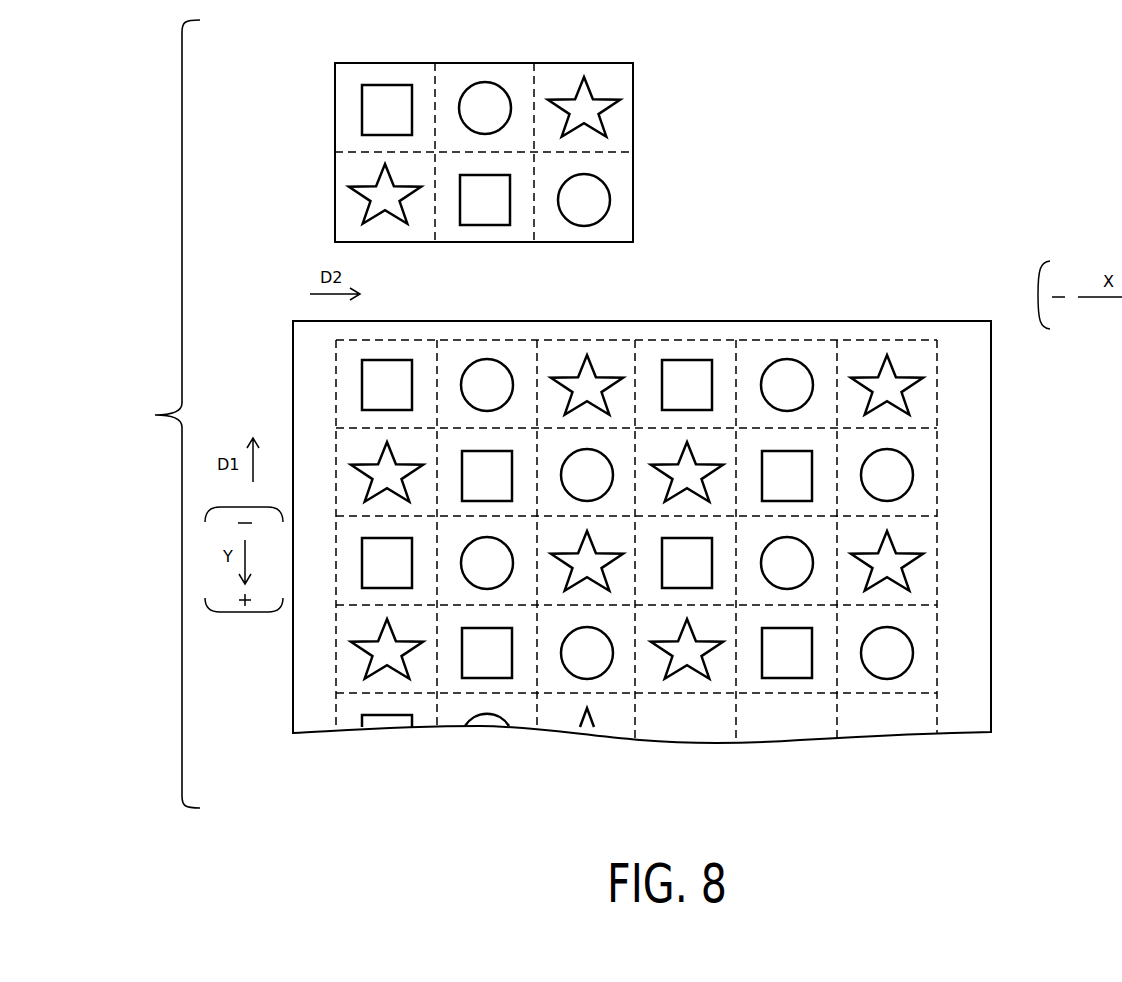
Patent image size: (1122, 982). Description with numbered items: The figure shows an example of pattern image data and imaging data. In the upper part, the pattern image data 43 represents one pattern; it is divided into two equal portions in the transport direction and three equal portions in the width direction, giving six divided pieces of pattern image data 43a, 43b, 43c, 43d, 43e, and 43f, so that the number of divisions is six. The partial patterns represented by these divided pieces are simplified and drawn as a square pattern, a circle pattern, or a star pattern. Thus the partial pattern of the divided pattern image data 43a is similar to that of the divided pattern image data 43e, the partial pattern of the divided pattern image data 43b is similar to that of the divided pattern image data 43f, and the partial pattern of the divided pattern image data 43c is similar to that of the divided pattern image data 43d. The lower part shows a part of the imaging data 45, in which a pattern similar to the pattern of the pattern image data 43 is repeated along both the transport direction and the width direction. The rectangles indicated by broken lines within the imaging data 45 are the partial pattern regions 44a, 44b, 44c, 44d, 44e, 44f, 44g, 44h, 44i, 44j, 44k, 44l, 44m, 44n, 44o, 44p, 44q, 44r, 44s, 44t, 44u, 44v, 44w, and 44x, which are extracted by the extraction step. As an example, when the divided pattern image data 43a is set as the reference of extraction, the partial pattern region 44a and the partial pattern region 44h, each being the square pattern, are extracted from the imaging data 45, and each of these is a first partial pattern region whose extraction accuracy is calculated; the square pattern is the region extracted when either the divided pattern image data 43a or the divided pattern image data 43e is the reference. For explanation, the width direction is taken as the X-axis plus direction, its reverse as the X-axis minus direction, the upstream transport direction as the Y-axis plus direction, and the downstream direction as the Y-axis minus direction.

The pattern image data 43 is at (311, 90).
The divided pattern image data 43a is at (390, 72).
The divided pattern image data 43b is at (483, 73).
The divided pattern image data 43c is at (581, 75).
The divided pattern image data 43d is at (421, 189).
The divided pattern image data 43e is at (468, 172).
The divided pattern image data 43f is at (627, 182).
The partial pattern region 44a is at (380, 347).
The partial pattern region 44b is at (485, 347).
The partial pattern region 44c is at (587, 347).
The partial pattern region 44d is at (687, 347).
The partial pattern region 44e is at (787, 347).
The partial pattern region 44f is at (887, 347).
The partial pattern region 44g is at (338, 450).
The partial pattern region 44h is at (470, 457).
The partial pattern region 44i is at (560, 450).
The partial pattern region 44j is at (653, 450).
The partial pattern region 44k is at (757, 455).
The partial pattern region 44l is at (918, 455).
The partial pattern region 44m is at (338, 537).
The partial pattern region 44n is at (470, 592).
The partial pattern region 44o is at (580, 588).
The partial pattern region 44p is at (678, 593).
The partial pattern region 44q is at (787, 593).
The partial pattern region 44r is at (918, 545).
The partial pattern region 44s is at (338, 625).
The partial pattern region 44t is at (500, 670).
The partial pattern region 44u is at (600, 673).
The partial pattern region 44v is at (712, 680).
The partial pattern region 44w is at (808, 677).
The partial pattern region 44x is at (918, 633).
The imaging data 45 is at (962, 332).